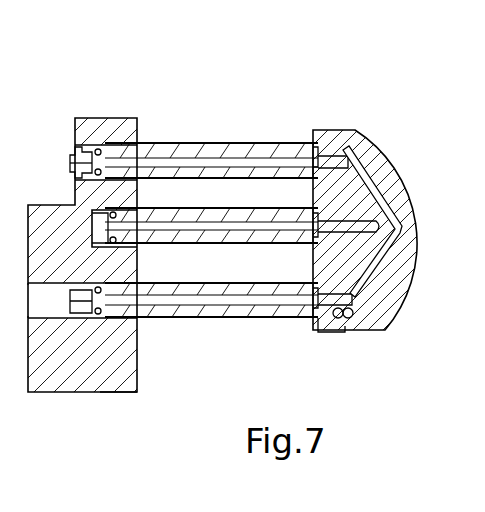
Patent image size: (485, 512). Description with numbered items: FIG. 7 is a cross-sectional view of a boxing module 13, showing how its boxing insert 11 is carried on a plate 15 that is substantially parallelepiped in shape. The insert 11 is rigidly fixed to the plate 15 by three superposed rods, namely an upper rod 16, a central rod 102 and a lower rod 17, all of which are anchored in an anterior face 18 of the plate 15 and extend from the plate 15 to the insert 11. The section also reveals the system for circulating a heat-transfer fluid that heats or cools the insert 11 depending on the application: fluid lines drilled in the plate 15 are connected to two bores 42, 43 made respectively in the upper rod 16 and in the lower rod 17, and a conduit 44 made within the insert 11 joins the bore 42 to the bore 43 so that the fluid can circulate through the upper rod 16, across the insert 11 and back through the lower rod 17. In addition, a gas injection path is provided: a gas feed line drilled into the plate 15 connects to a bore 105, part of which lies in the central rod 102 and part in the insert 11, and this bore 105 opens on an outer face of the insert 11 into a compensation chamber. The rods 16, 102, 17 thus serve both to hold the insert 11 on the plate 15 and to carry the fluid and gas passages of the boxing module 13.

The boxing module 13 is at (100, 82).
The plate 15 is at (85, 378).
The anterior face 18 is at (140, 372).
The upper rod 16 is at (192, 150).
The bore 42 is at (250, 160).
The central rod 102 is at (168, 244).
The bore 105 is at (263, 244).
The lower rod 17 is at (170, 317).
The bore 43 is at (242, 300).
The insert 11 is at (366, 329).
The conduit 44 is at (390, 155).